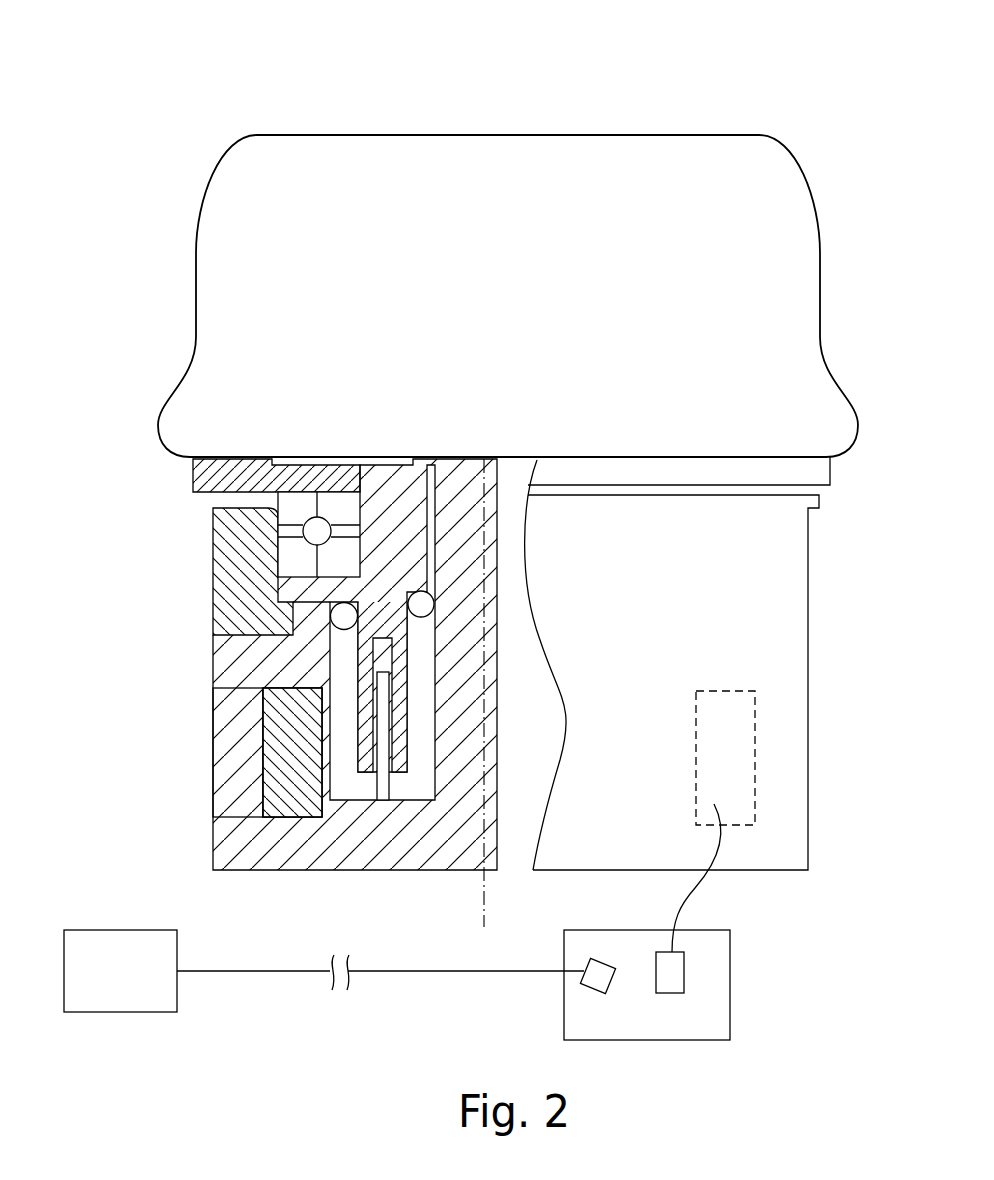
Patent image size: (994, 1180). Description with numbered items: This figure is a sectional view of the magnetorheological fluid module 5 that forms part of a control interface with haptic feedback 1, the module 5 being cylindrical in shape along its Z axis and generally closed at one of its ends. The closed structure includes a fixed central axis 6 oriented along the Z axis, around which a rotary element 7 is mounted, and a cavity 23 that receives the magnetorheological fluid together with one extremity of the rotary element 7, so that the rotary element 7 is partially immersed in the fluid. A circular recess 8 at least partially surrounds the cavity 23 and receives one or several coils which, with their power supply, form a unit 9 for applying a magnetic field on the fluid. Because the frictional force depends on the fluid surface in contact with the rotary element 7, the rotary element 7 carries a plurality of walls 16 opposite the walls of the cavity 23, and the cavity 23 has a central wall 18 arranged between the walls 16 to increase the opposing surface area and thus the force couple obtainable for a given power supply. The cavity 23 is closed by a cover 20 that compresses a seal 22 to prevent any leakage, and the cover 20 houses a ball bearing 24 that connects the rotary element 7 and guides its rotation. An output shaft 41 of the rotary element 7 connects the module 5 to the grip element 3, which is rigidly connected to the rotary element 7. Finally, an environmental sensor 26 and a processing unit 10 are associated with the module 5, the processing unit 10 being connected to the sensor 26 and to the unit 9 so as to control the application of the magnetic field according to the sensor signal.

The control interface with haptic feedback 1 is at (813, 126).
The grip element 3 is at (212, 258).
The magnetorheological fluid module 5 is at (780, 863).
The fixed central axis 6 is at (467, 817).
The rotary element 7 is at (245, 636).
The circular recess 8 is at (255, 808).
The unit for applying a magnetic field 9 is at (285, 735).
The processing unit 10 is at (730, 1010).
The walls 16 is at (357, 785).
The central wall 18 is at (382, 787).
The cover 20 is at (358, 575).
The seal 22 is at (437, 609).
The cavity 23 is at (420, 629).
The ball bearing 24 is at (278, 533).
The environmental sensor 26 is at (324, 971).
The output shaft 41 is at (205, 478).